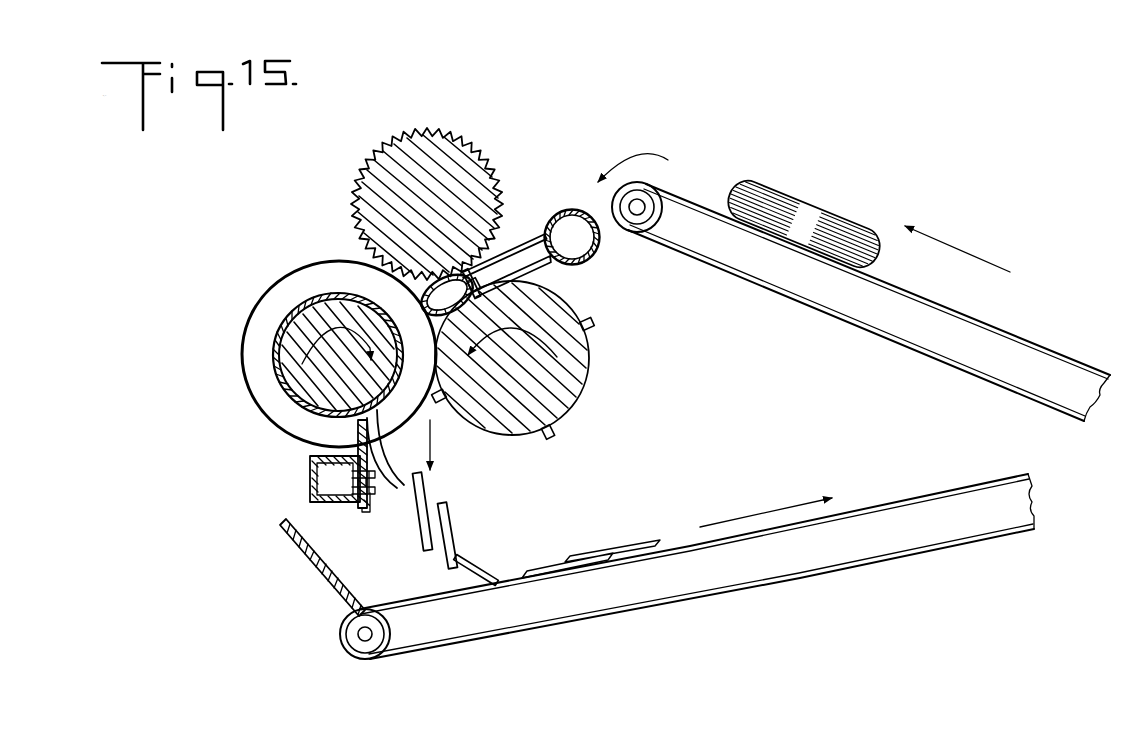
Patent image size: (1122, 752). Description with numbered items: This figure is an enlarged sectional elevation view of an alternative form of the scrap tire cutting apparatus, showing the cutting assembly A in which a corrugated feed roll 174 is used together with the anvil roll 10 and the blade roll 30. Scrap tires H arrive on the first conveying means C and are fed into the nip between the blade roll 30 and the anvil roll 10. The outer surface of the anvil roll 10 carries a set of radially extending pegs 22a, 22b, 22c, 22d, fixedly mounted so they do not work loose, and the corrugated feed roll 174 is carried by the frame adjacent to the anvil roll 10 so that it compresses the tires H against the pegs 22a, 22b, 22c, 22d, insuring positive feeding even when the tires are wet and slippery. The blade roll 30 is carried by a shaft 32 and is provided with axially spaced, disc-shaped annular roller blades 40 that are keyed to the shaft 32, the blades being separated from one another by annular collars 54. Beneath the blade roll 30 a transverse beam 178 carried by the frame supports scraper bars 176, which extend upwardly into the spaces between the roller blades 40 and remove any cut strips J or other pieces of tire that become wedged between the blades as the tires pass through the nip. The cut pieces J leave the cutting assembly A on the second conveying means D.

The anvil roll 10 is at (596, 385).
The peg 22a is at (492, 291).
The peg 22b is at (600, 324).
The peg 22c is at (560, 440).
The peg 22d is at (441, 404).
The blade roll 30 is at (240, 355).
The shaft 32 is at (295, 375).
The roller blade 40 is at (265, 300).
The annular collar 54 is at (276, 328).
The corrugated feed roll 174 is at (470, 156).
The scraper bar 176 is at (358, 427).
The transverse beam 178 is at (310, 480).
The cutting assembly A is at (200, 387).
The first conveying means C is at (1033, 340).
The second conveying means D is at (925, 500).
The scrap tires H is at (546, 212).
The large pieces of scrap tire J is at (468, 531).